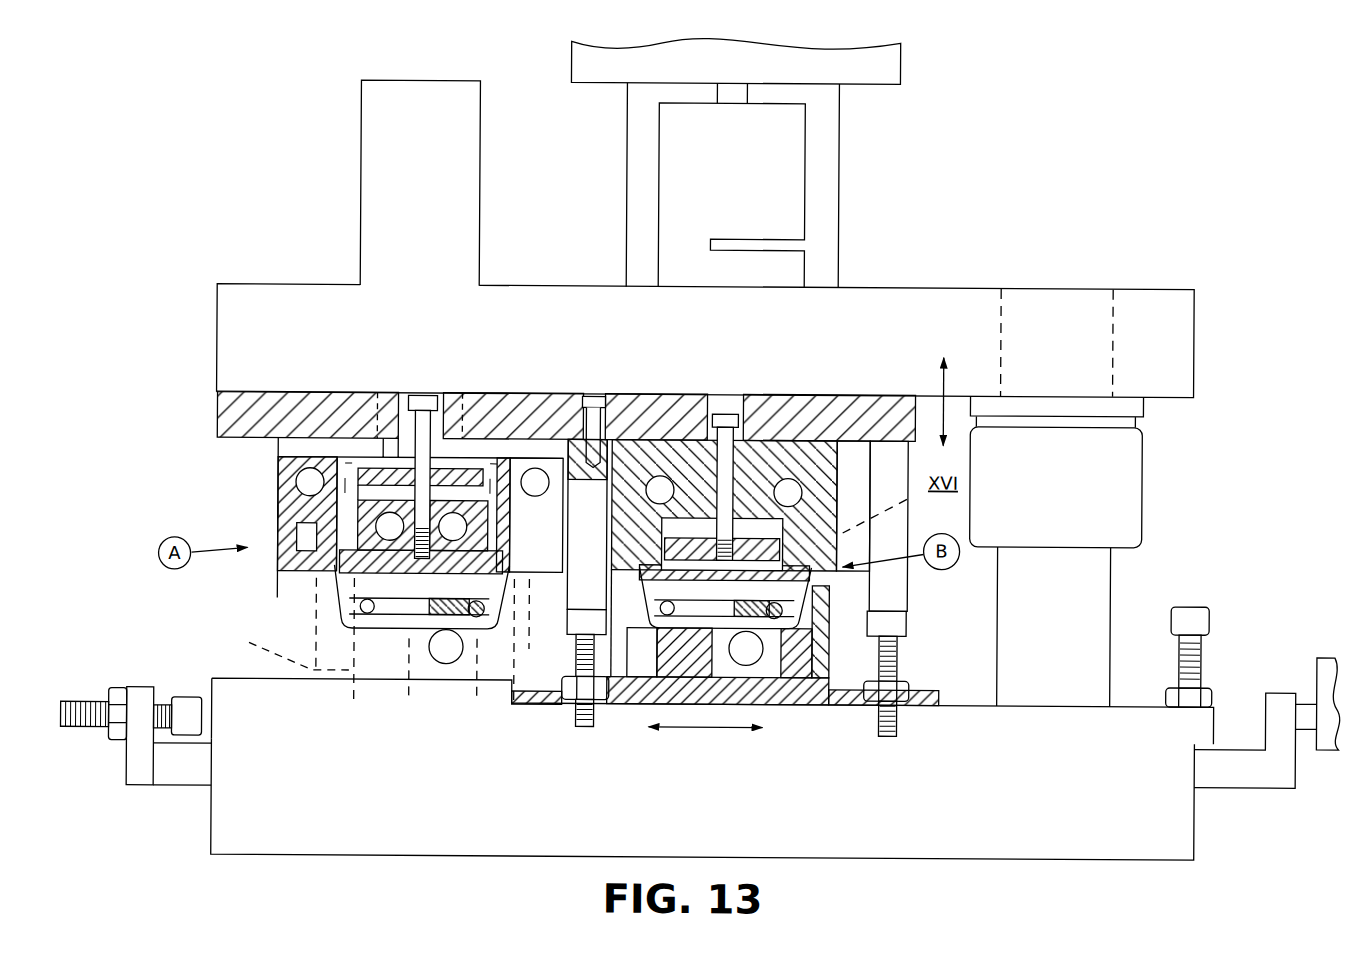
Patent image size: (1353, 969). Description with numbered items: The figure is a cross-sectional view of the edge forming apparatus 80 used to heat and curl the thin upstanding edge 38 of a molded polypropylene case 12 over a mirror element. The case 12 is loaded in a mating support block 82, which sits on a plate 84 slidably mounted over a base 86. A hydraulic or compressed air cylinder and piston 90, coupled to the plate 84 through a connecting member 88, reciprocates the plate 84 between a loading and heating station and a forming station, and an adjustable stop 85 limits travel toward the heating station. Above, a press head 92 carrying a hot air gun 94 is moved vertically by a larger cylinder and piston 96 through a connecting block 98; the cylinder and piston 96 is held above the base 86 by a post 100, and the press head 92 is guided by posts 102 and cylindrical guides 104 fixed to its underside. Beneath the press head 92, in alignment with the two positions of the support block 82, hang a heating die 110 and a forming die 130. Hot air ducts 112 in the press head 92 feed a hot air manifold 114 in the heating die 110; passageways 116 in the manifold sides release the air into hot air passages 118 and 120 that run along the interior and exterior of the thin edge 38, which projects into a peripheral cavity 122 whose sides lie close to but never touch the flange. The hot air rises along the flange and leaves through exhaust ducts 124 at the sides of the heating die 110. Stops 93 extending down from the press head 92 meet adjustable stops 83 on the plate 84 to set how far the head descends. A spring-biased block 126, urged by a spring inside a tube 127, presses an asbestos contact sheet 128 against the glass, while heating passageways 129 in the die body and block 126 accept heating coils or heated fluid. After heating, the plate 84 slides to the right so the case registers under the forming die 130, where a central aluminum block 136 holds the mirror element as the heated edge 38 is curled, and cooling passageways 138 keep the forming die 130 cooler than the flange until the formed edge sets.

The case 12 is at (505, 628).
The thin edge 38 is at (530, 604).
The edge forming apparatus 80 is at (1074, 203).
The support block 82 is at (925, 652).
The adjustable stops 83 is at (735, 672).
The plate 84 is at (712, 711).
The adjustable stop 85 is at (178, 700).
The base 86 is at (674, 799).
The connecting member 88 is at (1267, 702).
The cylinder and piston 90 is at (1316, 652).
The press head 92 is at (706, 341).
The stops 93 is at (737, 525).
The hot air gun 94 is at (420, 183).
The cylinder and piston 96 is at (870, 63).
The connecting block 98 is at (731, 195).
The post 100 is at (827, 172).
The posts 102 is at (1054, 627).
The cylindrical guides 104 is at (1057, 472).
The heating die 110 is at (276, 475).
The hot air ducts 112 is at (495, 425).
The hot air manifold 114 is at (412, 445).
The passageways 116 is at (557, 425).
The hot air passages 118 is at (423, 515).
The hot air passages 120 is at (522, 512).
The cavity 122 is at (540, 535).
The exhaust ducts 124 is at (283, 507).
The spring-biased block 126 is at (390, 535).
The tube 127 is at (428, 438).
The asbestos mirror element contact sheet 128 is at (335, 575).
The heating passageways 129 is at (455, 530).
The forming die 130 is at (843, 468).
The central block 136 is at (725, 487).
The cooling passageways 138 is at (786, 487).